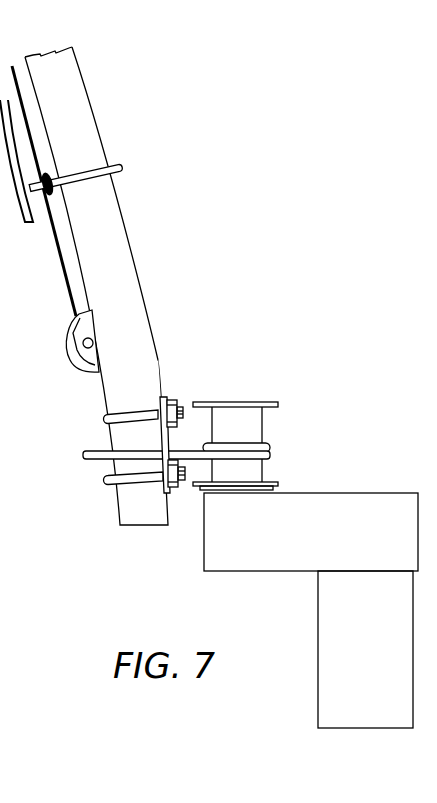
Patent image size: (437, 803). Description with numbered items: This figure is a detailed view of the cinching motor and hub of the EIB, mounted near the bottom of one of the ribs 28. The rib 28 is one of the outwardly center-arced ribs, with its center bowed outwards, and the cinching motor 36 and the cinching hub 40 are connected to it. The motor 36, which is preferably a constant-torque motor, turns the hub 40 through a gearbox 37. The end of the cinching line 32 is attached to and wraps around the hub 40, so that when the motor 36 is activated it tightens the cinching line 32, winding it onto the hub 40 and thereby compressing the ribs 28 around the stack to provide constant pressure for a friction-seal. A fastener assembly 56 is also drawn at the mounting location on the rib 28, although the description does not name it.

The rib 28 is at (101, 267).
The cinching hub 40 is at (233, 418).
The cinching line 32 is at (271, 452).
The bolt and nut assembly 56 is at (178, 492).
The gearbox 37 is at (317, 536).
The cinching motor 36 is at (380, 640).